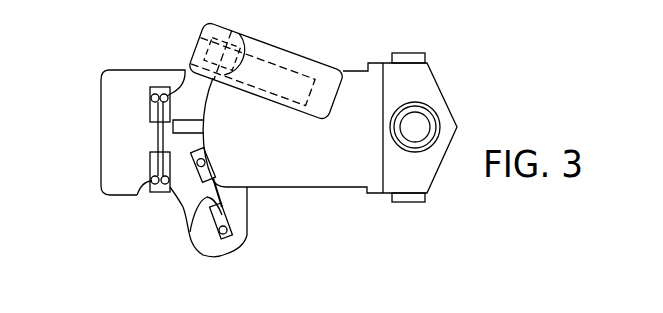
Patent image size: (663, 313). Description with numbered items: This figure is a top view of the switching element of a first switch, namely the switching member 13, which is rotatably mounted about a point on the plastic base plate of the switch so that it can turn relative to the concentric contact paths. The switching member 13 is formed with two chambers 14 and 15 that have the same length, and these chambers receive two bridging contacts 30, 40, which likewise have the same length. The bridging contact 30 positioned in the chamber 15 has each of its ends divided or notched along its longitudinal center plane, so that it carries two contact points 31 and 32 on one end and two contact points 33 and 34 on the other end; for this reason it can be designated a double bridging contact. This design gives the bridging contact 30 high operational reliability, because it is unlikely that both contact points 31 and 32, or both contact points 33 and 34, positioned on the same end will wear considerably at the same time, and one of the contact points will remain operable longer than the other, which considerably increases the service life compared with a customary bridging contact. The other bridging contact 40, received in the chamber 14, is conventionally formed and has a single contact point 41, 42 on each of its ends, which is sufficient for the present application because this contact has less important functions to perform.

The switching member 13 is at (110, 87).
The chamber 14 is at (211, 243).
The chamber 15 is at (155, 87).
The bridging contact 30 is at (156, 133).
The contact point 31 is at (138, 195).
The contact point 32 is at (177, 198).
The contact point 33 is at (152, 96).
The contact point 34 is at (184, 70).
The bridging contact 40 is at (193, 222).
The contact point 41 is at (231, 236).
The contact point 42 is at (207, 159).